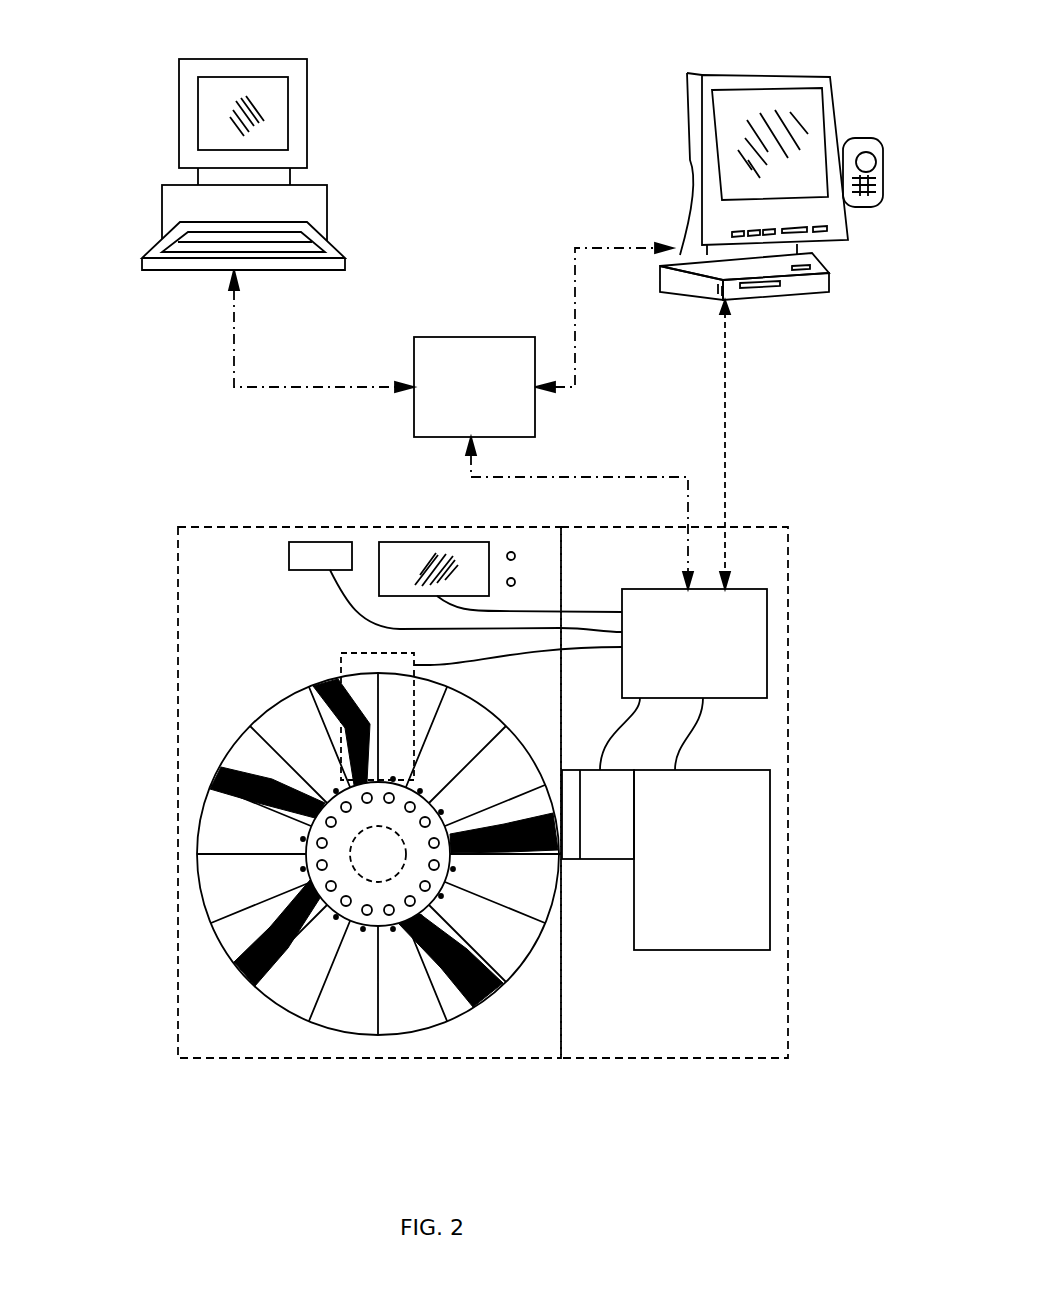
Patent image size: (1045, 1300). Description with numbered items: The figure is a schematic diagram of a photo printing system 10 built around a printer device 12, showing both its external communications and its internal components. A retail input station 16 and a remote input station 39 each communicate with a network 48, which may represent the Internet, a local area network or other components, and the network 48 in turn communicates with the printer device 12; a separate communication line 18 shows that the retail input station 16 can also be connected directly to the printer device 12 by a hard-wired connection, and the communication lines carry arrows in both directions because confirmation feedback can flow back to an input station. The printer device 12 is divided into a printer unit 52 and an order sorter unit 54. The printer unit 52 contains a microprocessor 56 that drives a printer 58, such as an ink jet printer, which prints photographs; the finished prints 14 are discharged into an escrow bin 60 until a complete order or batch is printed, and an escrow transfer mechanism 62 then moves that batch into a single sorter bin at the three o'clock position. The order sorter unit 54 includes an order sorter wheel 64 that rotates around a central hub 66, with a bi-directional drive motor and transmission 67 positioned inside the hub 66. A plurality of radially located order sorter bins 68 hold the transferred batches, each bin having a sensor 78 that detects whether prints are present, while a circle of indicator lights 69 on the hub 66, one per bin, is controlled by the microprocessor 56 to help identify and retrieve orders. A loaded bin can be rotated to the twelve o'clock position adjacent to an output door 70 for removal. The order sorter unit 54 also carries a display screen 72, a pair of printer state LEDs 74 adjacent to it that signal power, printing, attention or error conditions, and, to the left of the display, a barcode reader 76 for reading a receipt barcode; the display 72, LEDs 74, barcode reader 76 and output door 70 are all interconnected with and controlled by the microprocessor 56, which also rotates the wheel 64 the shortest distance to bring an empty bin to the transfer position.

The printing system 10 is at (420, 55).
The remote input station 39 is at (190, 150).
The retail input station 16 is at (697, 162).
The network 48 is at (487, 399).
The communication line 18 is at (727, 425).
The printer device 12 is at (198, 495).
The order sorter unit 54 is at (178, 588).
The printer unit 52 is at (788, 565).
The barcode reader 76 is at (333, 542).
The display screen 72 is at (440, 542).
The printer state LEDs 74 is at (514, 578).
The output door 70 is at (352, 653).
The microprocessor 56 is at (750, 680).
The escrow bin 60 is at (598, 824).
The printer 58 is at (690, 901).
The escrow transfer mechanism 62 is at (573, 850).
The finished prints 14 is at (347, 885).
The order sorter wheel 64 is at (252, 696).
The order sorter bins 68 is at (215, 822).
The indicator lights 69 is at (390, 915).
The sensor 78 is at (337, 917).
The central hub 66 is at (365, 866).
The drive motor and transmission 67 is at (400, 866).